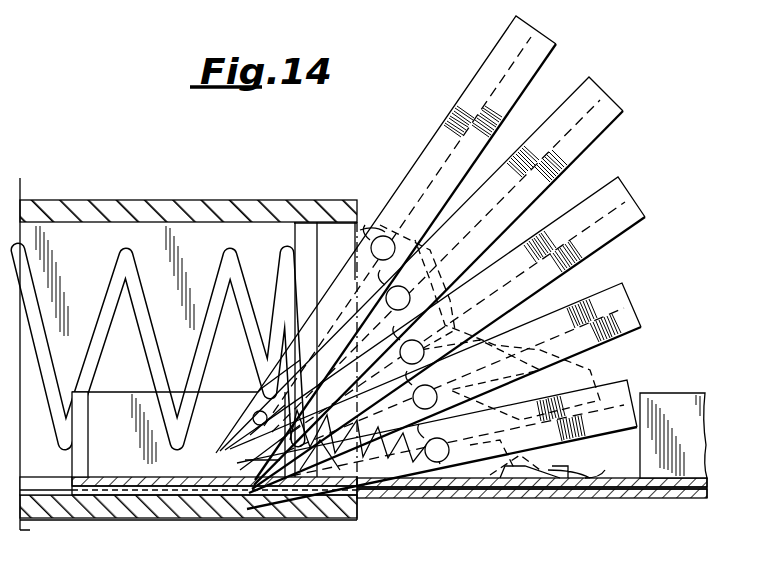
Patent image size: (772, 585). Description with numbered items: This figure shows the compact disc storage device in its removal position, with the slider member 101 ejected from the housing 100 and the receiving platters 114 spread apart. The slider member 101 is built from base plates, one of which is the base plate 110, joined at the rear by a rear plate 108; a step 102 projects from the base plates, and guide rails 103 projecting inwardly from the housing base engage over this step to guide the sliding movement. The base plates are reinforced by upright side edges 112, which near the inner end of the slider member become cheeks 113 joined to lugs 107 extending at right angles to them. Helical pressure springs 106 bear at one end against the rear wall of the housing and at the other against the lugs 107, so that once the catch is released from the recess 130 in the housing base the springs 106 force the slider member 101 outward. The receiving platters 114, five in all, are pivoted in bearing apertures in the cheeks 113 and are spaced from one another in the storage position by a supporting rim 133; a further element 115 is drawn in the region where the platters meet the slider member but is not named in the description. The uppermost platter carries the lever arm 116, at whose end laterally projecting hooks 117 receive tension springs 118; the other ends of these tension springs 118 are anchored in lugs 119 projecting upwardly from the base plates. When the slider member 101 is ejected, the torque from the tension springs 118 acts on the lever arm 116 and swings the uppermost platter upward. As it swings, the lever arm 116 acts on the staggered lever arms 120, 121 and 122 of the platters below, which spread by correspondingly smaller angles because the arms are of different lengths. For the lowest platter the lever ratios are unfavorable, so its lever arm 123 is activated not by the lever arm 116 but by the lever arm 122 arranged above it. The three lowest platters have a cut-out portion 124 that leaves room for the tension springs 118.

The housing 100 is at (125, 212).
The helical pressure springs 106 is at (226, 250).
The lugs 107 is at (302, 235).
The lever arm 116 is at (345, 250).
The cheeks 113 is at (365, 230).
The supporting rim 133 is at (480, 66).
The receiving platters 114 is at (578, 100).
The cut-out portion 124 is at (505, 365).
The lever arm 120 is at (340, 378).
The hooks 117 is at (252, 418).
The lever arm 123 is at (378, 470).
The lever arm 121 is at (320, 475).
The lever arm 122 is at (262, 482).
The ball 115 is at (436, 466).
The tension springs 118 is at (510, 480).
The recess 130 is at (235, 495).
The guide rails 103 is at (60, 482).
The rear plate 108 is at (92, 478).
The slider member 101 is at (596, 507).
The step 102 is at (655, 490).
The lugs 119 is at (598, 482).
The base plate 110 is at (700, 500).
The upright side edges 112 is at (687, 410).